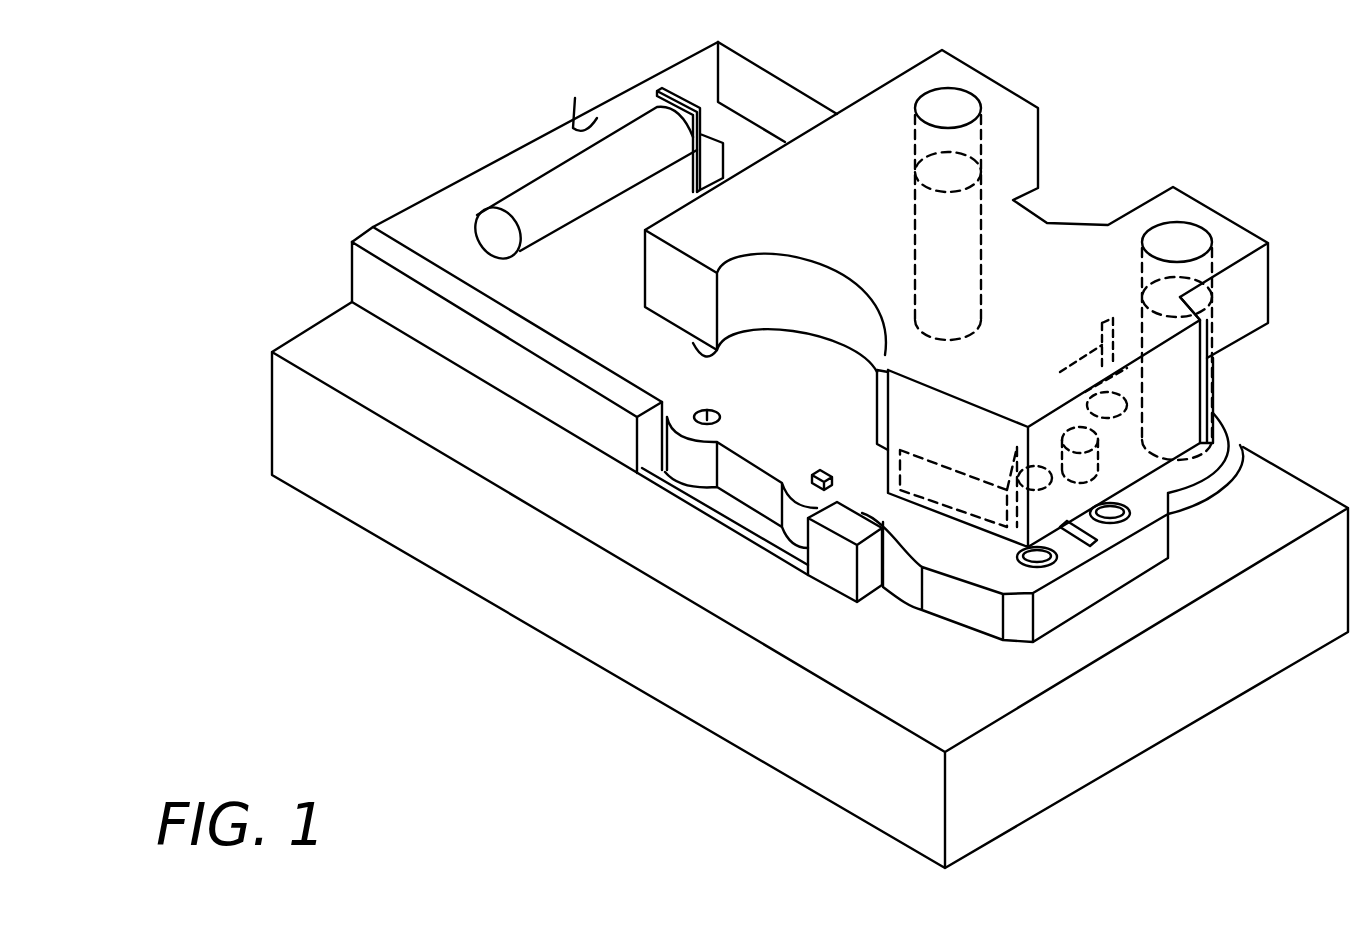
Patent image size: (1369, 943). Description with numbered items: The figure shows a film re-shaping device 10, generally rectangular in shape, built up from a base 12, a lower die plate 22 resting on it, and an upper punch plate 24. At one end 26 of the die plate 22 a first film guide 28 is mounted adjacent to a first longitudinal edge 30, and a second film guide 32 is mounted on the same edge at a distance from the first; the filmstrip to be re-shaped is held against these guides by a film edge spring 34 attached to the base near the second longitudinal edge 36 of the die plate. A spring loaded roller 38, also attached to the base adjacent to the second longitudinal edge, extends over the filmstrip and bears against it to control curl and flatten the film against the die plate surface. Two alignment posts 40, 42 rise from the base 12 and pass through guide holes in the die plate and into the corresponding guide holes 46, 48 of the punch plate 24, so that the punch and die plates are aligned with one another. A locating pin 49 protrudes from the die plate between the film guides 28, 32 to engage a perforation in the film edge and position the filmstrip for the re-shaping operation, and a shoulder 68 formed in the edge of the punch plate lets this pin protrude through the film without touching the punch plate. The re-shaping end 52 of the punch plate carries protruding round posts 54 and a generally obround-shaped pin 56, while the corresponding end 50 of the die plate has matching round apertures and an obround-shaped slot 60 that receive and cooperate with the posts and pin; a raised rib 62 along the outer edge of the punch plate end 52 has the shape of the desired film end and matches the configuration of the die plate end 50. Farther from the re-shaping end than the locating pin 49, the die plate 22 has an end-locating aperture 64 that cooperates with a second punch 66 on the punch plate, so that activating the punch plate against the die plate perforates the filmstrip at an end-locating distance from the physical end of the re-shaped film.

The film re-shaping device 10 is at (270, 491).
The base 12 is at (378, 533).
The lower die plate 22 is at (460, 362).
The upper punch plate 24 is at (1272, 283).
The end of the die plate 26 is at (452, 188).
The first film guide 28 is at (360, 277).
The first longitudinal edge 30 is at (733, 510).
The second film guide 32 is at (837, 572).
The film edge spring 34 is at (648, 82).
The second longitudinal edge 36 is at (682, 172).
The spring loaded roller 38 is at (545, 152).
The alignment post 40 is at (913, 203).
The alignment post 42 is at (1217, 390).
The guide hole 46 is at (965, 100).
The guide hole 48 is at (1150, 248).
The locating pin 49 is at (820, 468).
The end of the die plate 50 is at (1062, 625).
The re-shaping end of the punch plate 52 is at (1213, 325).
The round posts 54 is at (1092, 378).
The obround-shaped pin 56 is at (1068, 403).
The obround-shaped slot 60 is at (1098, 547).
The raised rib 62 is at (958, 505).
The end-locating aperture 64 is at (712, 410).
The second punch 66 is at (695, 352).
The shoulder 68 is at (895, 356).